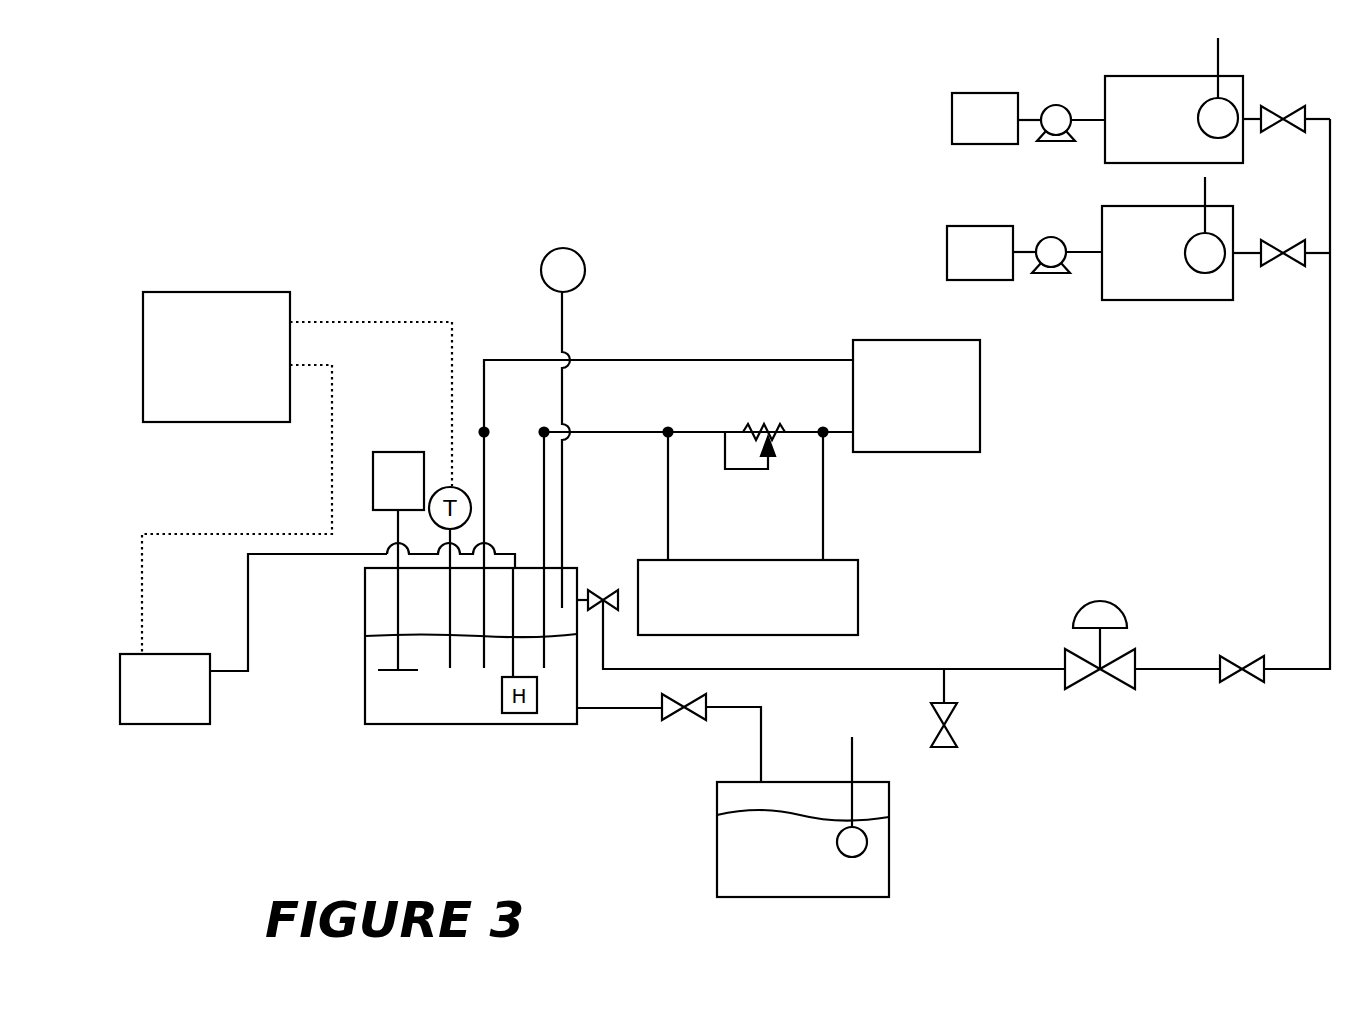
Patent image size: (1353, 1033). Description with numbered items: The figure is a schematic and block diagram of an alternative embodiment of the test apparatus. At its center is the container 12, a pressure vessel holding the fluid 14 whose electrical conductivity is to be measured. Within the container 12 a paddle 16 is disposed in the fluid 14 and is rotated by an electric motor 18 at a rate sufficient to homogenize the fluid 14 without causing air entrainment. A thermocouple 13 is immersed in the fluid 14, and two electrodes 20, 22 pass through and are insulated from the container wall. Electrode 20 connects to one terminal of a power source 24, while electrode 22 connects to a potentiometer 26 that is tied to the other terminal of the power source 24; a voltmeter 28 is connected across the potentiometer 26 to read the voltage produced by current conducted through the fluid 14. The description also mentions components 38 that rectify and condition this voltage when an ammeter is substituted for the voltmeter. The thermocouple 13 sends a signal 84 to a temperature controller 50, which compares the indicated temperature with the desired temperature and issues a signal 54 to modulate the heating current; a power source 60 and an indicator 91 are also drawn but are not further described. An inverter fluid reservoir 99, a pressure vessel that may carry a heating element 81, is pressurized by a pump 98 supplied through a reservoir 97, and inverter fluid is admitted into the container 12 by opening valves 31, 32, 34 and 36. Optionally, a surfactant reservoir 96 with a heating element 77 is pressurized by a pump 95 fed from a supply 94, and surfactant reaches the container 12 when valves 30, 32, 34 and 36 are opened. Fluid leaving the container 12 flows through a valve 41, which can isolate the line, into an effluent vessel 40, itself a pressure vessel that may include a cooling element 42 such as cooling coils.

The container 12 is at (366, 605).
The thermocouple 13 is at (455, 487).
The fluid 14 is at (372, 660).
The paddle 16 is at (392, 672).
The electric motor 18 is at (400, 452).
The electrode 20 is at (485, 640).
The electrode 22 is at (545, 650).
The power source 24 is at (912, 340).
The potentiometer 26 is at (770, 428).
The voltmeter 28 is at (858, 597).
The valve 30 is at (1283, 130).
The valve 31 is at (1283, 263).
The valve 32 is at (1245, 680).
The valve 34 is at (1125, 617).
The valve 36 is at (600, 590).
The components 38 is at (936, 722).
The effluent vessel 40 is at (717, 838).
The valve 41 is at (690, 718).
The cooling element 42 is at (863, 760).
The temperature controller 50 is at (230, 292).
The signal 54 is at (334, 382).
The power source 60 is at (155, 654).
The heating element 77 is at (1227, 60).
The heating element 81 is at (1213, 188).
The signal 84 is at (368, 322).
The pressure indicator 91 is at (563, 248).
The surfactant supply 94 is at (960, 93).
The pump 95 is at (1055, 105).
The surfactant reservoir 96 is at (1247, 108).
The reservoir 97 is at (960, 226).
The pump 98 is at (1045, 276).
The inverter fluid reservoir 99 is at (1165, 300).